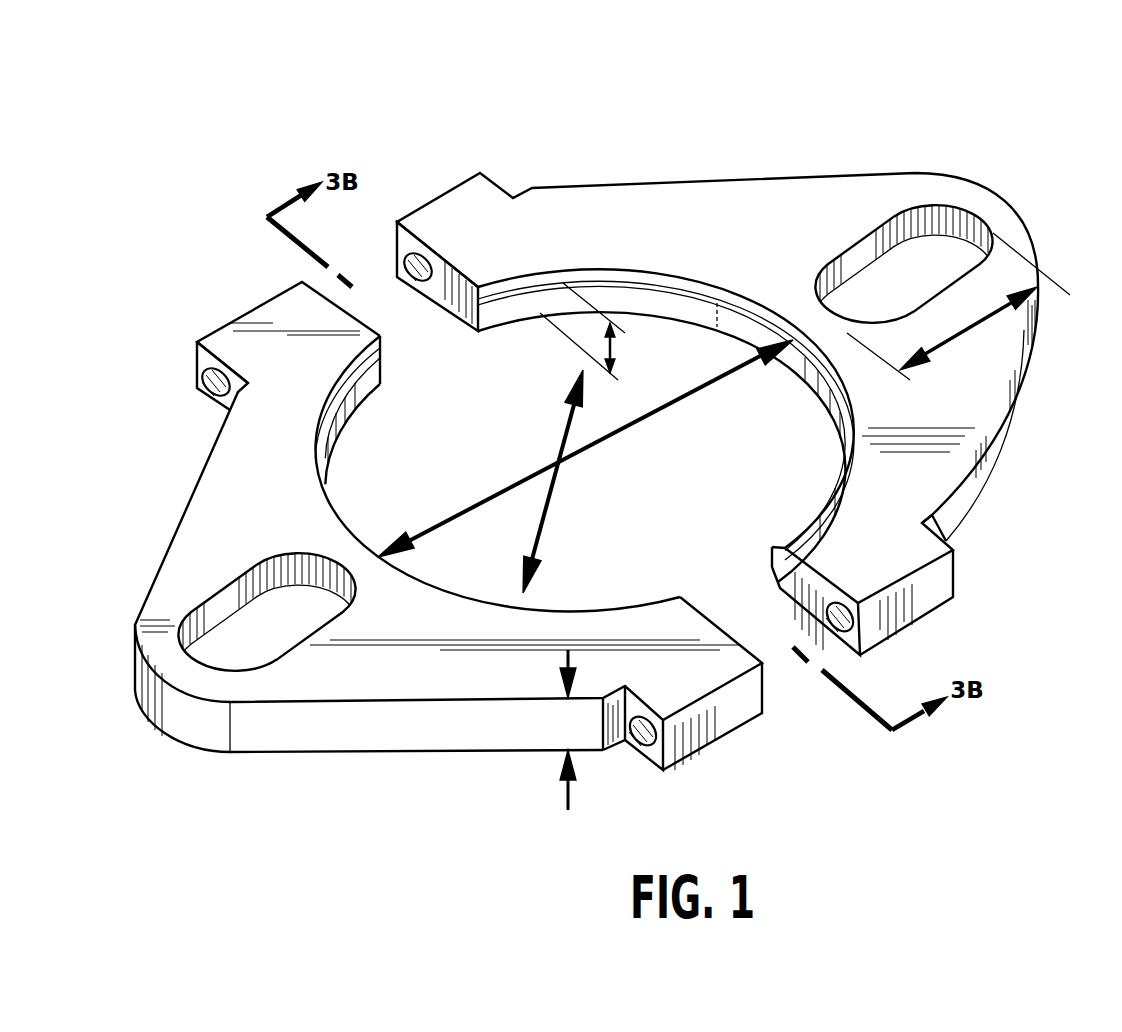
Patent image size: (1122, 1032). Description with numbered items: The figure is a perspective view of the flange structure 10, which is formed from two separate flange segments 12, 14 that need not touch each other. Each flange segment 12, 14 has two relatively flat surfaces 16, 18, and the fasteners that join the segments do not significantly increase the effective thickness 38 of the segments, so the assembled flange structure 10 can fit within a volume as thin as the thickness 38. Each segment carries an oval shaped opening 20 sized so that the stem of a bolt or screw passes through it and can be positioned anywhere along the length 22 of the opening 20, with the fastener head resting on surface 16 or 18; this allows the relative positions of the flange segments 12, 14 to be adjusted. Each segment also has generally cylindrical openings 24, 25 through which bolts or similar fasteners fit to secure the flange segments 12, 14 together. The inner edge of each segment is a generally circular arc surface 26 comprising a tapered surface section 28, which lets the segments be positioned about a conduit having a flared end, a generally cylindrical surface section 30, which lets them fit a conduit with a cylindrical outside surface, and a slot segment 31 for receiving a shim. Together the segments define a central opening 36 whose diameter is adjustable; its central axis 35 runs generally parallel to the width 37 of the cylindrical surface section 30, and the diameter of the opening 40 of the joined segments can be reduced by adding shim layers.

The flange structure 10 is at (795, 112).
The flange segment 12 is at (614, 196).
The flange segment 14 is at (208, 500).
The flat surface 16 is at (730, 241).
The flat surface 18 is at (978, 482).
The oval shaped opening 20 is at (233, 643).
The length of opening 22 is at (958, 306).
The generally cylindrical opening 24 is at (200, 378).
The generally cylindrical opening 25 is at (640, 745).
The generally circular arc surface 26 is at (693, 322).
The tapered surface section 28 is at (468, 330).
The generally cylindrical surface section 30 is at (507, 305).
The slot segment 31 is at (605, 270).
The central axis 35 is at (565, 432).
The central opening 36 is at (585, 448).
The width of the cylindrical surface section 37 is at (620, 350).
The thickness 38 is at (573, 748).
The opening 40 is at (629, 510).